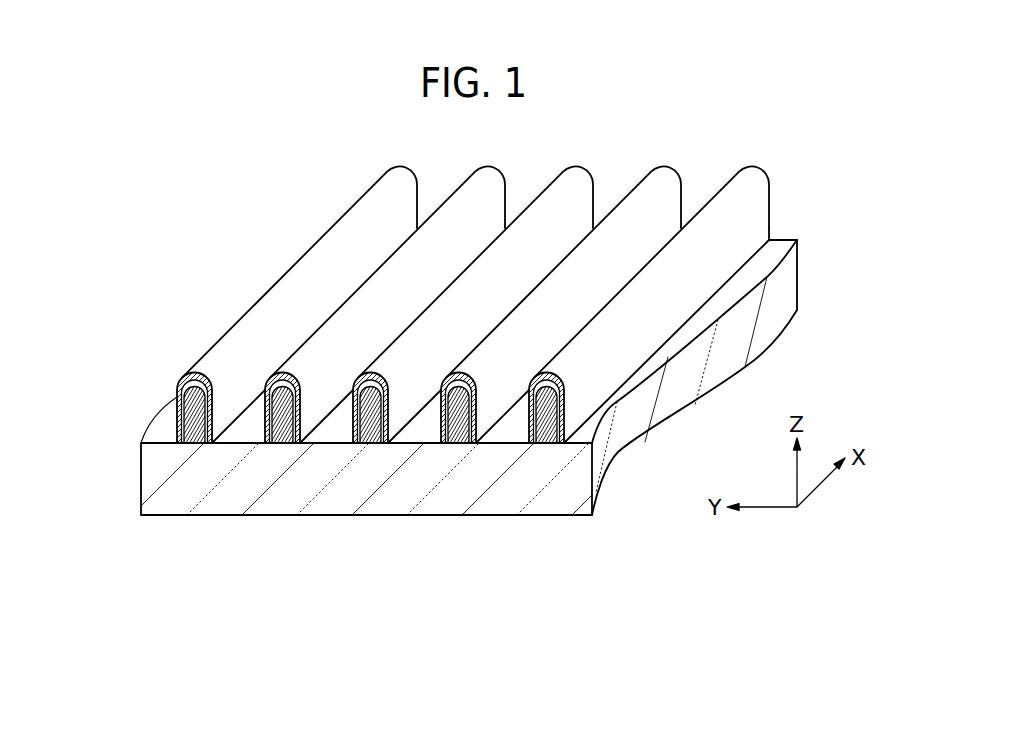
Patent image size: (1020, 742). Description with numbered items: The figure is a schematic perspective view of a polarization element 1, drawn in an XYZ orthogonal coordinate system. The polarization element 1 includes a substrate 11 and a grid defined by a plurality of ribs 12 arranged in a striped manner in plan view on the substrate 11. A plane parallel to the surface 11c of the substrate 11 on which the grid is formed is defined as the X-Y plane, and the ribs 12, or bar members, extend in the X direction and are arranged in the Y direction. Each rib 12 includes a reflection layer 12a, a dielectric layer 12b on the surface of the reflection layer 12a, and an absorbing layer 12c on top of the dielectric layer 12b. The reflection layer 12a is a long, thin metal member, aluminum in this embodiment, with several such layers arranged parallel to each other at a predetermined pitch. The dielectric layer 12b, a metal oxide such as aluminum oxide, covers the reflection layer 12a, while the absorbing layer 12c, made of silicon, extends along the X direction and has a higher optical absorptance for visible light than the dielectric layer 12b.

The polarization element 1 is at (836, 146).
The substrate 11 is at (784, 318).
The surface of the substrate 11c is at (513, 437).
The rib 12 is at (93, 341).
The reflection layer 12a is at (178, 418).
The dielectric layer 12b is at (181, 389).
The absorbing layer 12c is at (187, 367).